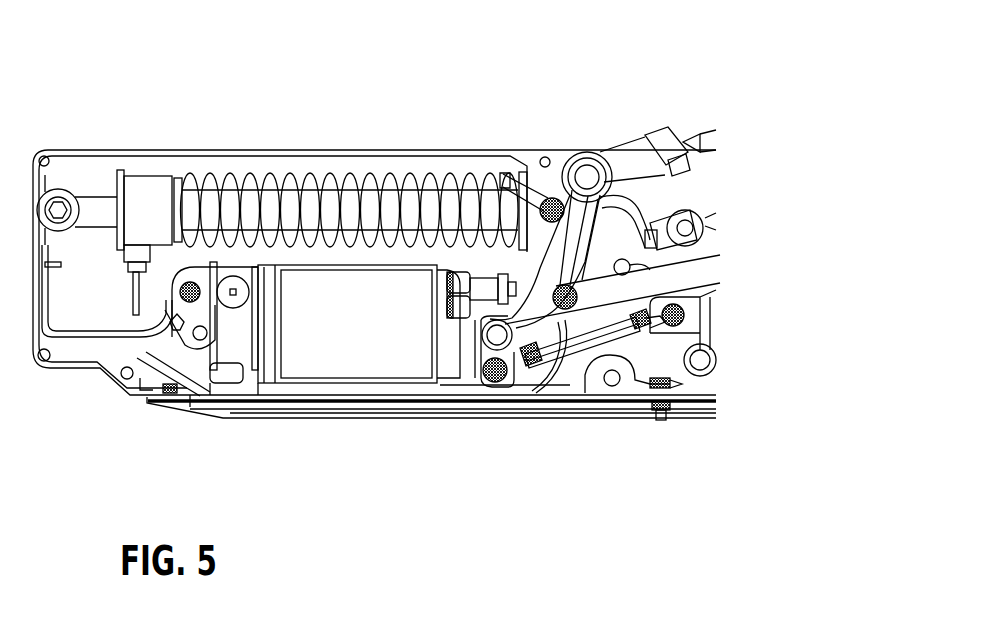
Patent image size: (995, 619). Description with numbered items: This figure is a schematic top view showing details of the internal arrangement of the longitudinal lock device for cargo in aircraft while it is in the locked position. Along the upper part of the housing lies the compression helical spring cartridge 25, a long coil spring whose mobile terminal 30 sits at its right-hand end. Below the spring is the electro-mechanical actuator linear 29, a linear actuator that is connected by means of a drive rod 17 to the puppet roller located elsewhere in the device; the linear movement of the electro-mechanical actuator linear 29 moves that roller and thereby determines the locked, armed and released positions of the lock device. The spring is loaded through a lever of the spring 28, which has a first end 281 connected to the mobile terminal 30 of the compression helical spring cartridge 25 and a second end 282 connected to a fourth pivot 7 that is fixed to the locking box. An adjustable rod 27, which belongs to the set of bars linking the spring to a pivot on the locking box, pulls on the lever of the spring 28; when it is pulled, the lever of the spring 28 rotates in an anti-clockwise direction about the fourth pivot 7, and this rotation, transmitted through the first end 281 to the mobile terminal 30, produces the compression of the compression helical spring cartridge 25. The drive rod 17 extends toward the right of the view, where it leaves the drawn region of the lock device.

The compression helical spring cartridge 25 is at (318, 172).
The mobile terminal 30 is at (548, 198).
The first end 281 is at (572, 153).
The electro-mechanical actuator linear 29 is at (470, 268).
The fourth pivot 7 is at (490, 337).
The second end 282 is at (533, 365).
The lever of the spring 28 is at (543, 325).
The adjustable rod 27 is at (604, 388).
The drive rod 17 is at (690, 282).